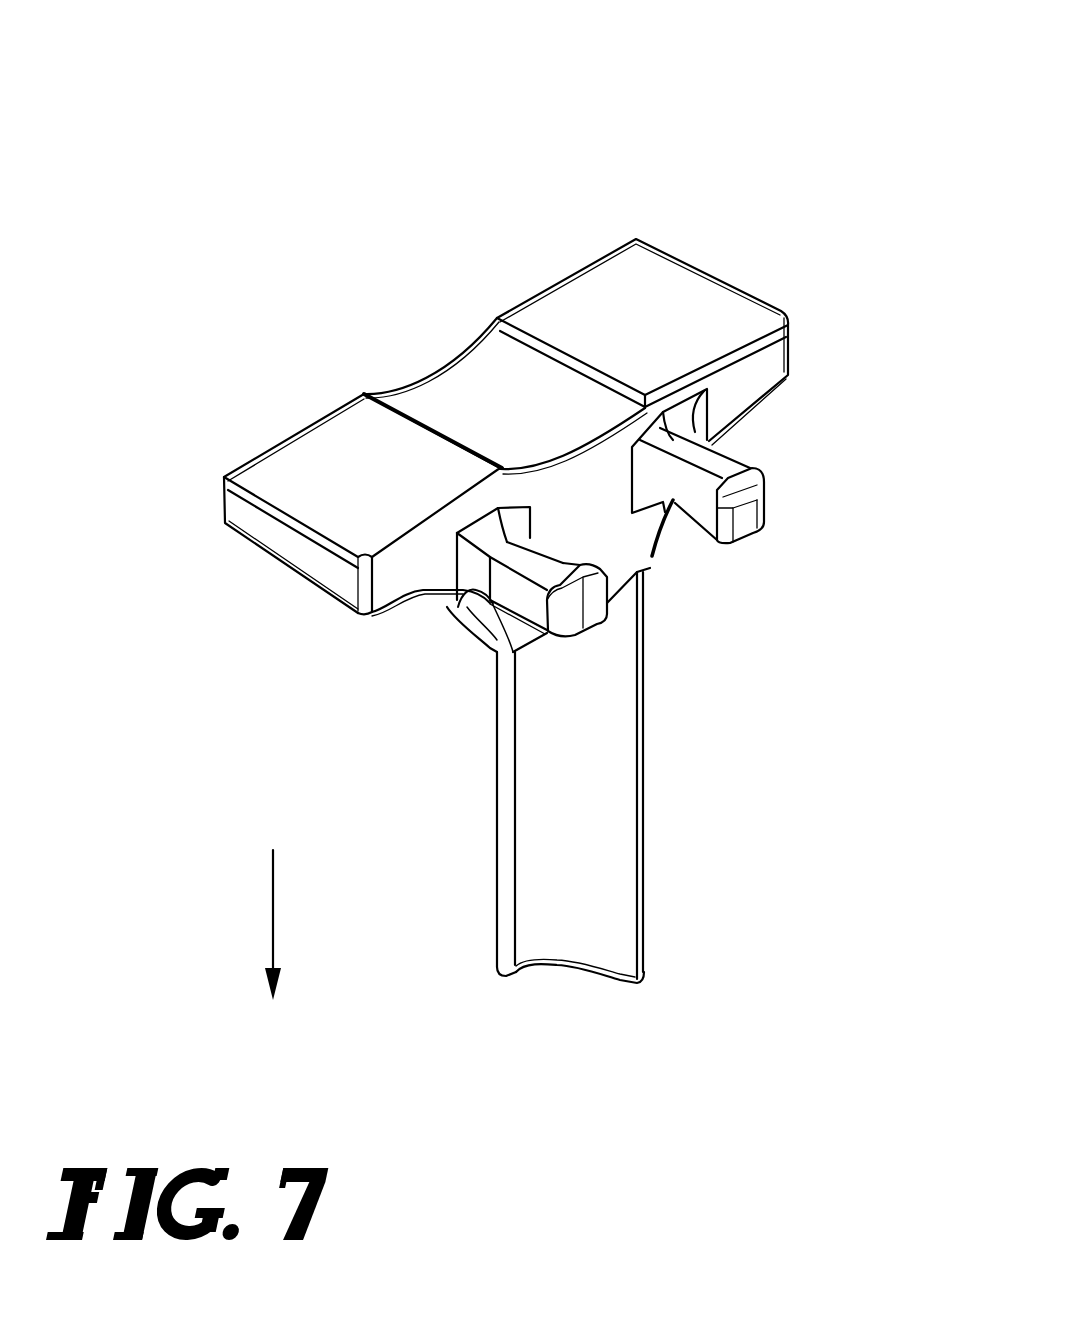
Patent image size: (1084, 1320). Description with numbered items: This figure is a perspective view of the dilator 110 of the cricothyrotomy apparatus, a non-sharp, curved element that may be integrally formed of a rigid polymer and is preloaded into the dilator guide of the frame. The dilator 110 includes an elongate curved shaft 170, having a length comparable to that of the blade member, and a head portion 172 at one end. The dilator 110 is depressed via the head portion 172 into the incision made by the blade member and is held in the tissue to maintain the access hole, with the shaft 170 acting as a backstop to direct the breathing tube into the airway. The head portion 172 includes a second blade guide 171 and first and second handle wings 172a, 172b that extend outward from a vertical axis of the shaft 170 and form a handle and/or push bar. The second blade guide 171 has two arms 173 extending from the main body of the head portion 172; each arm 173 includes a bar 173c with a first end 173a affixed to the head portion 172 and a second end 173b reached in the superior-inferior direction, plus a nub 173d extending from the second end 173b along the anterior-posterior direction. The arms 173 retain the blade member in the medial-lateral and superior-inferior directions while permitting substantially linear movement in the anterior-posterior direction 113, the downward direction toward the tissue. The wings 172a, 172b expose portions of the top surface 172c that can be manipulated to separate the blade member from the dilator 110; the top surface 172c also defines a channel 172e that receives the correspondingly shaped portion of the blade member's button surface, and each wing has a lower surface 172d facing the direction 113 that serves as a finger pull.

The dilator 110 is at (690, 110).
The downward direction 113 is at (266, 912).
The elongate curved shaft 170 is at (501, 580).
The second blade guide 171 is at (582, 650).
The head portion 172 is at (182, 473).
The first handle wing 172a is at (242, 558).
The second handle wing 172b is at (720, 257).
The top surface 172c is at (288, 467).
The lower surface 172d is at (406, 616).
The channel 172e is at (473, 363).
The arm 173 is at (743, 440).
The first end 173a is at (727, 387).
The second end 173b is at (768, 535).
The bar 173c is at (752, 467).
The nub 173d is at (745, 522).